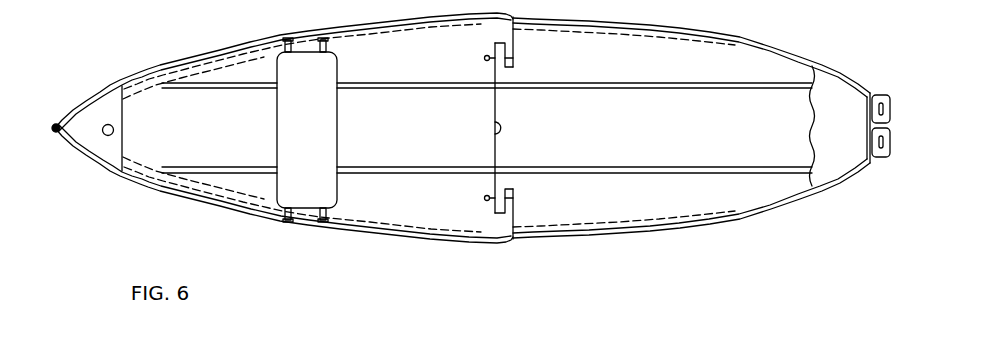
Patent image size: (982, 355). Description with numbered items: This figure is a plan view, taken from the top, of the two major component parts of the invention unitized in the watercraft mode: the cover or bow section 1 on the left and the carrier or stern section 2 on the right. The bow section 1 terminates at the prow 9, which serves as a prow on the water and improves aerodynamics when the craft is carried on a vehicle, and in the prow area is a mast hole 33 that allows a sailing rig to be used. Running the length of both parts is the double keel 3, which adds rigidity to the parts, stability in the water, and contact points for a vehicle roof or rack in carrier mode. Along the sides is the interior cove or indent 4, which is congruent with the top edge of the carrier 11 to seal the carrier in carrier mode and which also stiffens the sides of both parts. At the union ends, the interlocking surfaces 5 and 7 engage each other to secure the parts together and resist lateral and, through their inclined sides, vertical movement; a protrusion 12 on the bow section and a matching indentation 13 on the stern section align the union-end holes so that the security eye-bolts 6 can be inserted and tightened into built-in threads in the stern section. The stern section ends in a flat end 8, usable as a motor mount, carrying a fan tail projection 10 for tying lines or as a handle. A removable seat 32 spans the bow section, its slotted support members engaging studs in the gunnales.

The bow section 1 is at (363, 138).
The stern section 2 is at (622, 141).
The double keel 3 is at (252, 91).
The interior cove 4 is at (373, 40).
The interlocking surface 5 is at (467, 127).
The security eye-bolt 6 is at (529, 59).
The interlocking surface 7 is at (516, 68).
The flat end 8 is at (872, 93).
The prow 9 is at (53, 138).
The fan tail projection 10 is at (879, 159).
The top edge of the carrier 11 is at (747, 38).
The protrusion 12 is at (492, 99).
The indentation 13 is at (500, 100).
The removable seat 32 is at (307, 130).
The mast hole 33 is at (107, 138).